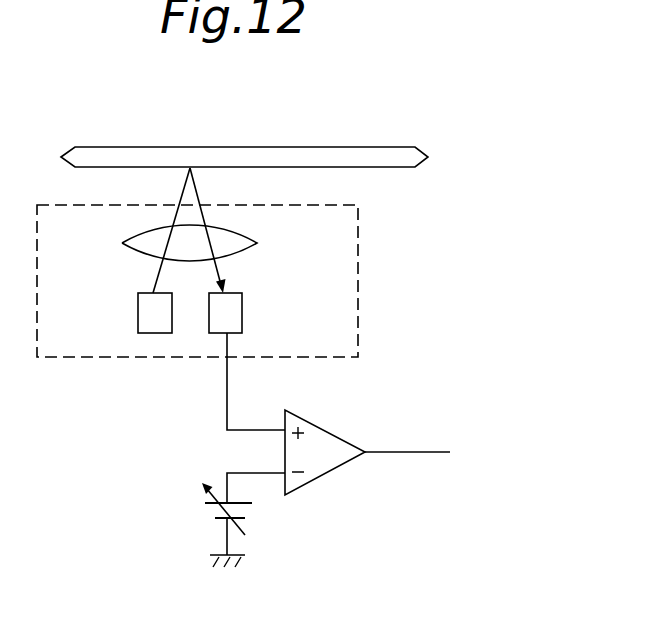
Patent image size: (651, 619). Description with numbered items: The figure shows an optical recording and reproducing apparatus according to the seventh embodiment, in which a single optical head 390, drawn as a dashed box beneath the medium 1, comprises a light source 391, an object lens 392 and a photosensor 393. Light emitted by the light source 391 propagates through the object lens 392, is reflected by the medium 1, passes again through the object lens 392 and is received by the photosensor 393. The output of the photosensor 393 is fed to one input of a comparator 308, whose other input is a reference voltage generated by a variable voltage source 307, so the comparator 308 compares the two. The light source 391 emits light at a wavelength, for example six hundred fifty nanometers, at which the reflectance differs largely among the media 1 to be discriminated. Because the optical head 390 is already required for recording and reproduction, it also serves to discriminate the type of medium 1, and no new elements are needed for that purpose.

The medium 1 is at (372, 147).
The optical head 390 is at (358, 268).
The light source 391 is at (137, 308).
The object lens 392 is at (246, 236).
The photosensor 393 is at (243, 313).
The comparator 308 is at (328, 432).
The variable voltage source 307 is at (252, 513).